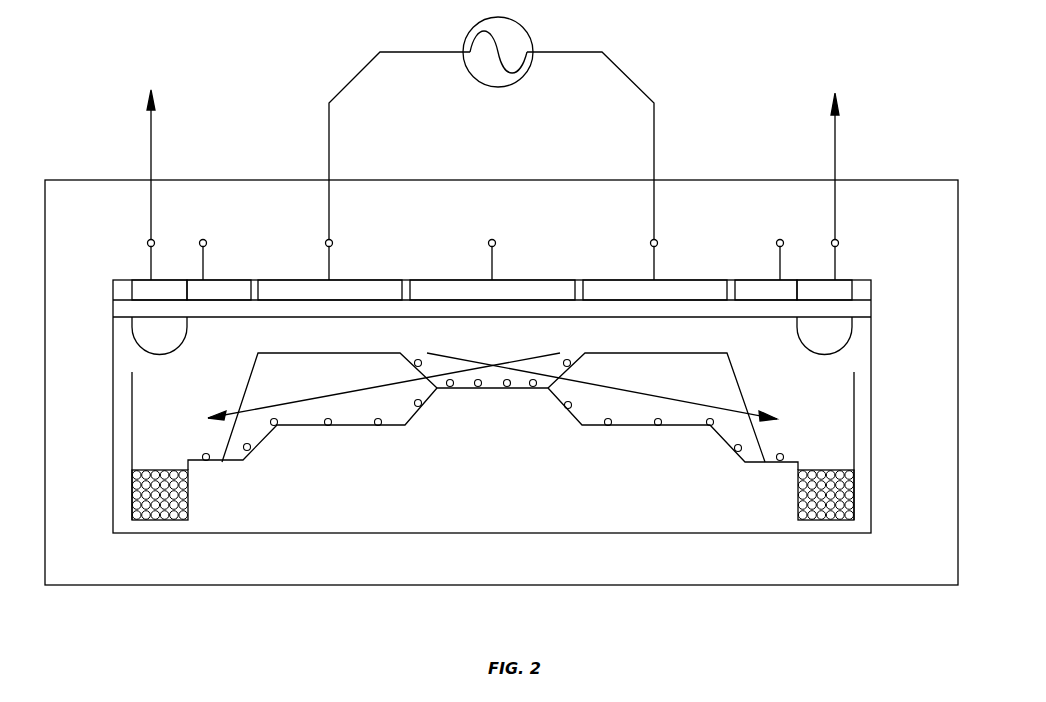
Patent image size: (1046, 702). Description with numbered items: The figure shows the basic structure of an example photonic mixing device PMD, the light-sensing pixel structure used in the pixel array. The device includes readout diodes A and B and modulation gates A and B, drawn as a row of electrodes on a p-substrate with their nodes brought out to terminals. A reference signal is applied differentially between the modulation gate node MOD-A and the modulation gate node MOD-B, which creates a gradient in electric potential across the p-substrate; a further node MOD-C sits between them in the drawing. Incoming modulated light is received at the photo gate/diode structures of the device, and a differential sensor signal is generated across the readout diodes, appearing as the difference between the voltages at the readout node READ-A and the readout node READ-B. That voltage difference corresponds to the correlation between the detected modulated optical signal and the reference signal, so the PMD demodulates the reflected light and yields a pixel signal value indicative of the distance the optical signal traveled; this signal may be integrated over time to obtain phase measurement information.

The Read-A readout node READ-A is at (110, 185).
The Mod-A modulation gate node MOD-A is at (398, 166).
The Mod-B modulation gate node MOD-B is at (628, 166).
The modulation electrode C MOD-C is at (530, 256).
The Read-B readout node READ-B is at (862, 168).
The photonic mixing device PMD is at (501, 382).